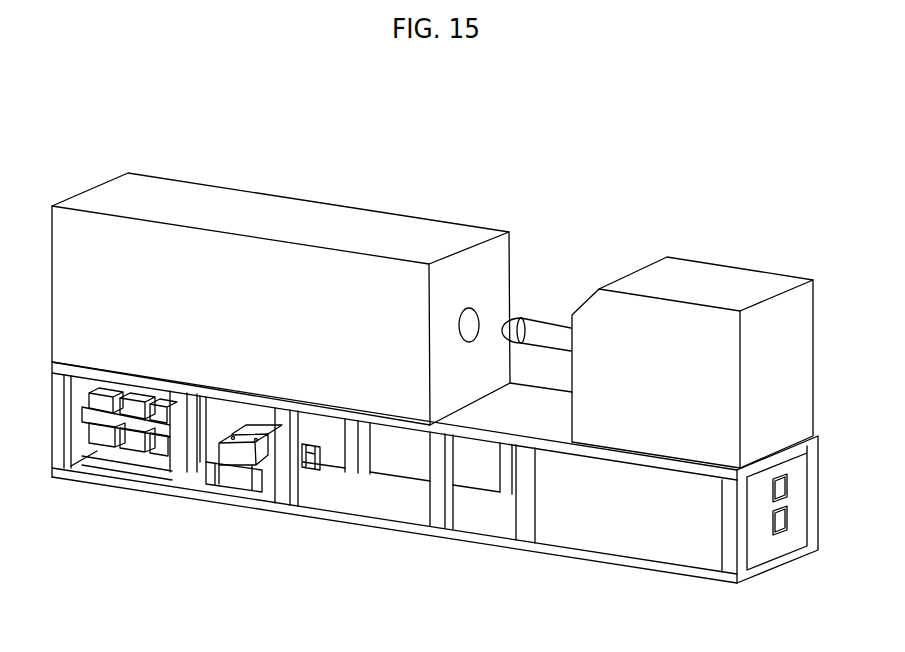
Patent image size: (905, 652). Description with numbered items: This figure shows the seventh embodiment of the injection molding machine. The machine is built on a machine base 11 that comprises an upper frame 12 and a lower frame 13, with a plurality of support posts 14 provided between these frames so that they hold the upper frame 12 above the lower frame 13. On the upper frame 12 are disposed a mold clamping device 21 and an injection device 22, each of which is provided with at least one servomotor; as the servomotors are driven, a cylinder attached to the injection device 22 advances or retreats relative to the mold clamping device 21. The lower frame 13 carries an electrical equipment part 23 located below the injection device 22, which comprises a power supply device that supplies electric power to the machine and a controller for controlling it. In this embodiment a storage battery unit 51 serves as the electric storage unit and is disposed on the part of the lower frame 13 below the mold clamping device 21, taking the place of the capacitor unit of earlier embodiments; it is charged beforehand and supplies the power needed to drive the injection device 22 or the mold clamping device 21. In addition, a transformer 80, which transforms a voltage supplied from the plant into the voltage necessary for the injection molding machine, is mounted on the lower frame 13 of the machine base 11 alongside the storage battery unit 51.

The machine base 11 is at (435, 493).
The upper frame 12 is at (568, 450).
The lower frame 13 is at (498, 540).
The support post 14 is at (437, 518).
The mold clamping device 21 is at (312, 211).
The injection device 22 is at (712, 277).
The electrical equipment part 23 is at (668, 543).
The storage battery unit 51 is at (232, 478).
The transformer 80 is at (133, 443).